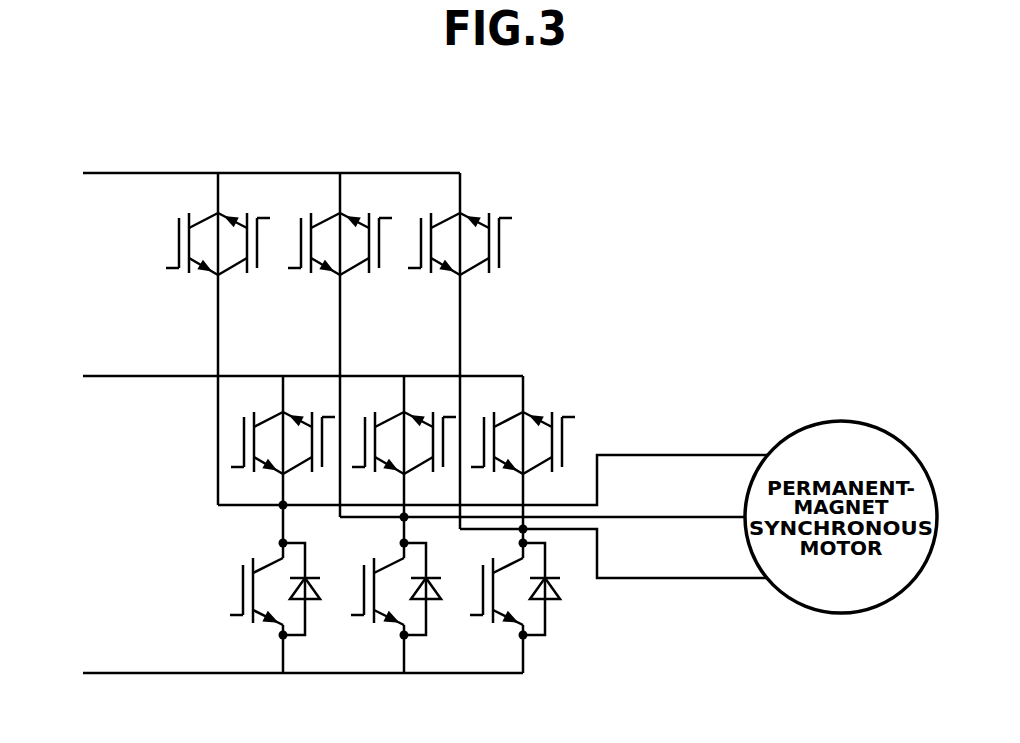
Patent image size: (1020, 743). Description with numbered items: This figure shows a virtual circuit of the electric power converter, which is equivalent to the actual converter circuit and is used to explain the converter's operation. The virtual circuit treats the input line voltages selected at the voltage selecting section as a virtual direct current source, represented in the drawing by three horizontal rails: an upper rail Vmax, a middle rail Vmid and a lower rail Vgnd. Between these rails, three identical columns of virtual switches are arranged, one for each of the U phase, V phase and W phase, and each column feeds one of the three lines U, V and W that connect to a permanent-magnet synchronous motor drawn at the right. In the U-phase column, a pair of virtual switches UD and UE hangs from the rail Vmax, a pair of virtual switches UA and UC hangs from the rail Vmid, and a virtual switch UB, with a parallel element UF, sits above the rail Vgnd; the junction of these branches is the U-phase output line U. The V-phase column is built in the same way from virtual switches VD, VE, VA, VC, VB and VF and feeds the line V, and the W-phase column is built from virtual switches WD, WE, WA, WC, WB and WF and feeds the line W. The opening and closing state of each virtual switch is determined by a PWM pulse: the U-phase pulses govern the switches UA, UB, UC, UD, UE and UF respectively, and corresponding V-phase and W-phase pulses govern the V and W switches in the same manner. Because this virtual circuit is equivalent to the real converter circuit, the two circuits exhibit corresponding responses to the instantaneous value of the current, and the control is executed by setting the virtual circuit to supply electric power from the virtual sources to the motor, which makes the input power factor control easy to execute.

The maximum potential rail Vmax is at (266, 159).
The middle potential rail Vmid is at (298, 362).
The ground potential rail Vgnd is at (298, 659).
The U phase U is at (493, 469).
The V phase V is at (542, 506).
The W phase W is at (614, 554).
The virtual switch UD is at (192, 229).
The virtual switch UE is at (244, 259).
The virtual switch UA is at (257, 430).
The virtual switch UC is at (309, 457).
The virtual switch UB is at (256, 585).
The virtual switch UF is at (312, 595).
The virtual switch VD is at (314, 229).
The virtual switch VE is at (366, 259).
The virtual switch VA is at (378, 430).
The virtual switch VC is at (430, 457).
The virtual switch VB is at (377, 585).
The virtual switch VF is at (432, 595).
The virtual switch WD is at (434, 229).
The virtual switch WE is at (486, 259).
The virtual switch WA is at (497, 430).
The virtual switch WC is at (549, 457).
The virtual switch WB is at (496, 585).
The virtual switch WF is at (554, 595).